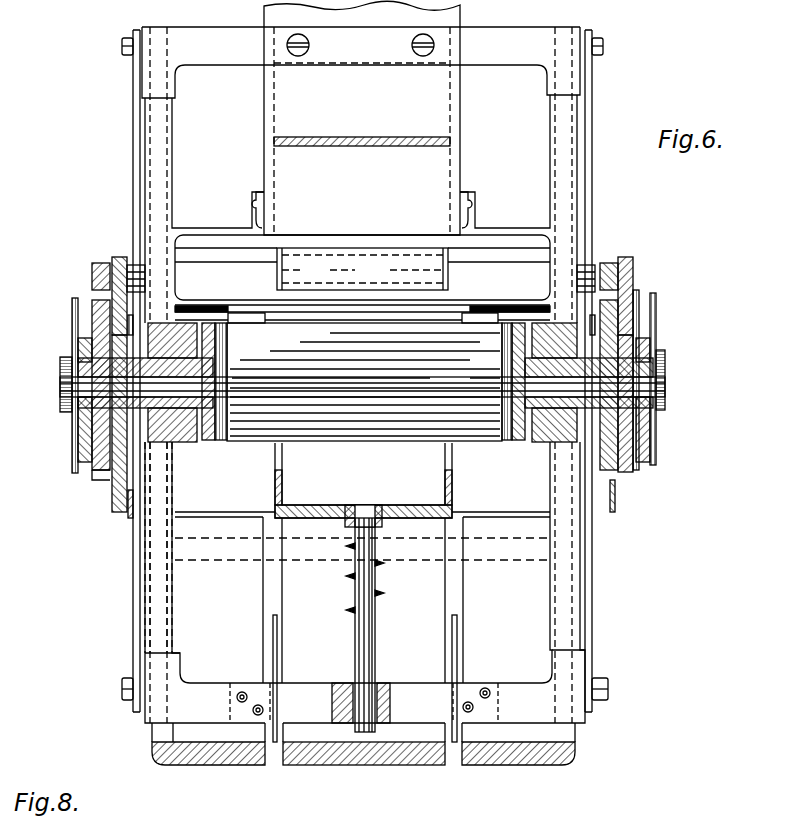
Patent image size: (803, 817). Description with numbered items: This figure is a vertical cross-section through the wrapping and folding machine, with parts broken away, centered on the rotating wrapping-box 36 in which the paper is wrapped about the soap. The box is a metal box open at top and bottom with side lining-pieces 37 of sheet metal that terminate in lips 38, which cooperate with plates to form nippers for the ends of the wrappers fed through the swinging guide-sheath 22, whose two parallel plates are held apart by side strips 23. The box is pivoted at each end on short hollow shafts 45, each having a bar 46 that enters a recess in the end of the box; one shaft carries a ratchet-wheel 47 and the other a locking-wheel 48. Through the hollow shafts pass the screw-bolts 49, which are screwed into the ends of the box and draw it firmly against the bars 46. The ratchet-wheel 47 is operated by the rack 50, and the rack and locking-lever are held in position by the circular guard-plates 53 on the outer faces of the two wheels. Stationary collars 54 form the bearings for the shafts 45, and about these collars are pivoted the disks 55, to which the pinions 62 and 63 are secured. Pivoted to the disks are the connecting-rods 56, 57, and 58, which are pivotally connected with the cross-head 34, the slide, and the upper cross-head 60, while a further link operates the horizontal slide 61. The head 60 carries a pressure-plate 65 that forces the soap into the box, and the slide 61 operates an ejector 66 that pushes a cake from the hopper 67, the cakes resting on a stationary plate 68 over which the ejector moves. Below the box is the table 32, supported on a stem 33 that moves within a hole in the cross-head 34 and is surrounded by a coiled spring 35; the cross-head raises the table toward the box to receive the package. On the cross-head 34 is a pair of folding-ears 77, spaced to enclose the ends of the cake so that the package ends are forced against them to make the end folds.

The swinging guide-sheath 22 is at (216, 312).
The side strips 23 is at (184, 305).
The table 32 is at (314, 518).
The stem 33 is at (355, 648).
The cross-head 34 is at (388, 682).
The coiled spring 35 is at (380, 563).
The rotating wrapping-box 36 is at (208, 442).
The side lining-pieces 37 is at (364, 382).
The lips 38 is at (244, 316).
The short hollow shafts 45 is at (118, 488).
The bar 46 is at (212, 340).
The ratchet-wheel 47 is at (656, 437).
The locking-wheel 48 is at (78, 350).
The screw-bolts 49 is at (72, 381).
The rack 50 is at (640, 300).
The circular guard-plates 53 is at (72, 312).
The stationary collars 54 is at (72, 425).
The disks 55 is at (118, 258).
The connecting-rod 56 is at (133, 630).
The connecting-rod 57 is at (128, 518).
The connecting-rod 58 is at (133, 128).
The upper cross-head 60 is at (361, 340).
The horizontal slide 61 is at (479, 254).
The pinion 62 is at (638, 490).
The pinion 63 is at (105, 475).
The pressure-plate 65 is at (356, 139).
The ejector 66 is at (362, 269).
The hopper 67 is at (362, 118).
The stationary plate 68 is at (362, 271).
The folding-ears 77 is at (273, 642).